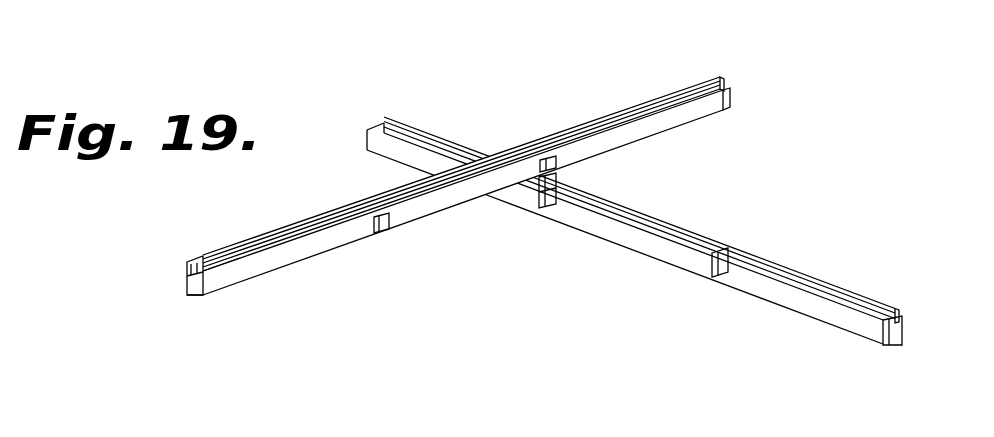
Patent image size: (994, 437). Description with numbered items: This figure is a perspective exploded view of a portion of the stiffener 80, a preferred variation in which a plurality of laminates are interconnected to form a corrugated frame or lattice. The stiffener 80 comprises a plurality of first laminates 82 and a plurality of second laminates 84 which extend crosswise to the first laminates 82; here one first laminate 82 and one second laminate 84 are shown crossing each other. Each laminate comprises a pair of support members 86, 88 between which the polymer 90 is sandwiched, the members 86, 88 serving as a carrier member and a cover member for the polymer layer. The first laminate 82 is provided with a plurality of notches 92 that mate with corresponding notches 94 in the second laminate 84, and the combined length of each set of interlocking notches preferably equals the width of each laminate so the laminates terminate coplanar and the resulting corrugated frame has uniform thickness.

The stiffener 80 is at (481, 136).
The first laminate 82 is at (660, 90).
The second laminate 84 is at (740, 312).
The support member 86 is at (186, 271).
The support member 88 is at (218, 279).
The polymer 90 is at (188, 286).
The notch 92 is at (380, 232).
The notch 94 is at (740, 258).